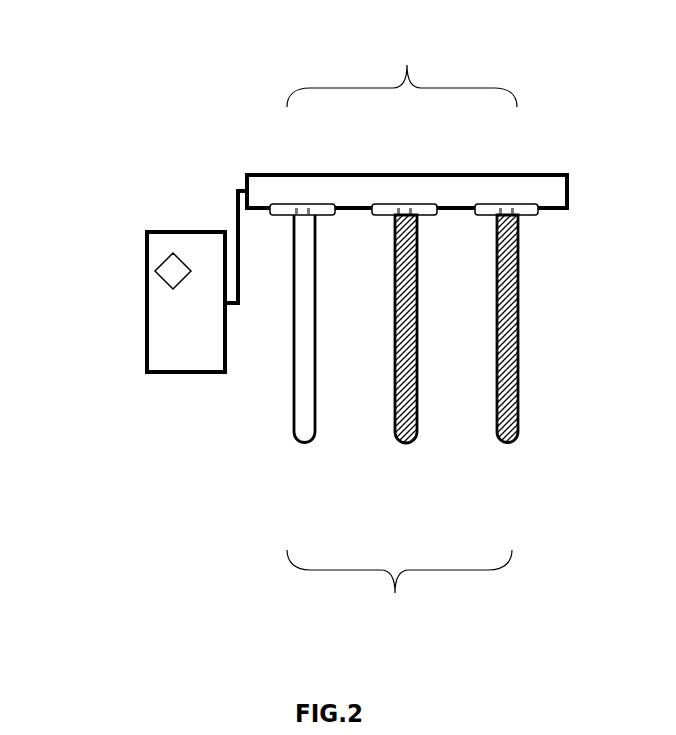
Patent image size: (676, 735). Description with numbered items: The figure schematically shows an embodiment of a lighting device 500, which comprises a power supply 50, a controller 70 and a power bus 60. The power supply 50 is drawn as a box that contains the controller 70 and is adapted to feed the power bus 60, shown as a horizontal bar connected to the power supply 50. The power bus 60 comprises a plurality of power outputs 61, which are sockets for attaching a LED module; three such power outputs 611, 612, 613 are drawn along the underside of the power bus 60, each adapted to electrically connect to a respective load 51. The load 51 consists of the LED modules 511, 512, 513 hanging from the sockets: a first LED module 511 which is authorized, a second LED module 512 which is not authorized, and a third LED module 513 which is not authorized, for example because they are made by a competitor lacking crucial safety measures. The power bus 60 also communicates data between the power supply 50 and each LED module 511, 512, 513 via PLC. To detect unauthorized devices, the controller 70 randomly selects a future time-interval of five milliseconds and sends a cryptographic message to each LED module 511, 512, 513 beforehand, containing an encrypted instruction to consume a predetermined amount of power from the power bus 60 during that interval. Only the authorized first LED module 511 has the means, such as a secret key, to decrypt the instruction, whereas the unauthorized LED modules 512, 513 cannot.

The lighting device 500 is at (170, 96).
The power supply 50 is at (137, 297).
The controller 70 is at (175, 270).
The power bus 60 is at (217, 187).
The plurality of power outputs 61 is at (404, 50).
The power output 611 is at (302, 190).
The power output 612 is at (403, 190).
The power output 613 is at (507, 190).
The load 51 is at (397, 614).
The first LED module 511 is at (301, 468).
The second LED module 512 is at (403, 468).
The third LED module 513 is at (507, 468).